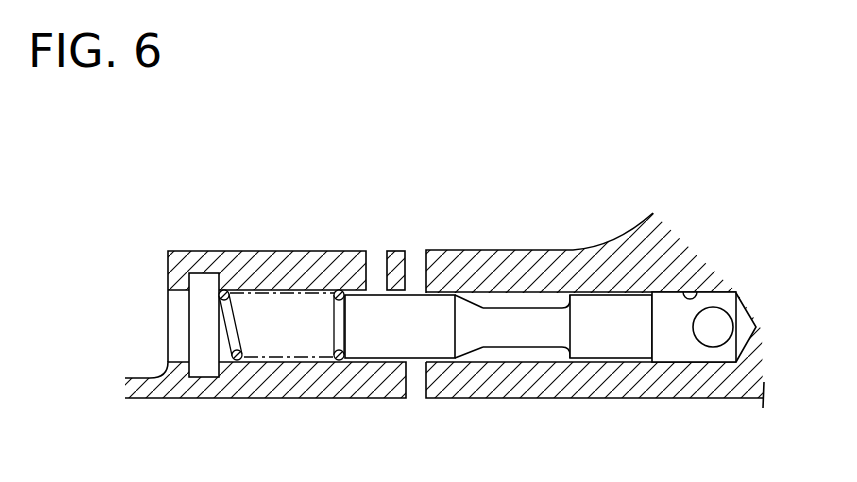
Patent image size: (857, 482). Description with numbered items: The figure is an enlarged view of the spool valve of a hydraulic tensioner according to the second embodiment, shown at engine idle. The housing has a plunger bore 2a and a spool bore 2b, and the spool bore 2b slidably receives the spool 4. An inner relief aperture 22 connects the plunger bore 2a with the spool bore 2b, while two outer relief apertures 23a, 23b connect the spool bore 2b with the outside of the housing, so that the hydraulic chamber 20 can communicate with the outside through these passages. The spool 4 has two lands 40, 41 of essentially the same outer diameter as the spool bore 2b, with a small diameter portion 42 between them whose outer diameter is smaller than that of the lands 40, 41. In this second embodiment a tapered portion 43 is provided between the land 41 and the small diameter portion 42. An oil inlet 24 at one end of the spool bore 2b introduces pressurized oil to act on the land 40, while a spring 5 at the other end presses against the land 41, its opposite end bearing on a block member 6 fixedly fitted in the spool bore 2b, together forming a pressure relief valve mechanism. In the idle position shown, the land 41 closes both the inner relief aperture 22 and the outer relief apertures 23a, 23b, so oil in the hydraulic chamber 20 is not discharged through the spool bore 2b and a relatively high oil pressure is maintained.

The plunger bore 2a is at (288, 398).
The spool bore 2b is at (700, 290).
The spool 4 is at (607, 292).
The spring 5 is at (237, 359).
The block member 6 is at (207, 372).
The hydraulic chamber 20 is at (584, 367).
The inner relief aperture 22 is at (426, 398).
The outer relief aperture 23a is at (420, 250).
The outer relief aperture 23b is at (373, 250).
The oil inlet 24 is at (728, 318).
The land 40 is at (617, 353).
The land 41 is at (380, 352).
The small diameter portion 42 is at (530, 335).
The tapered portion 43 is at (467, 345).